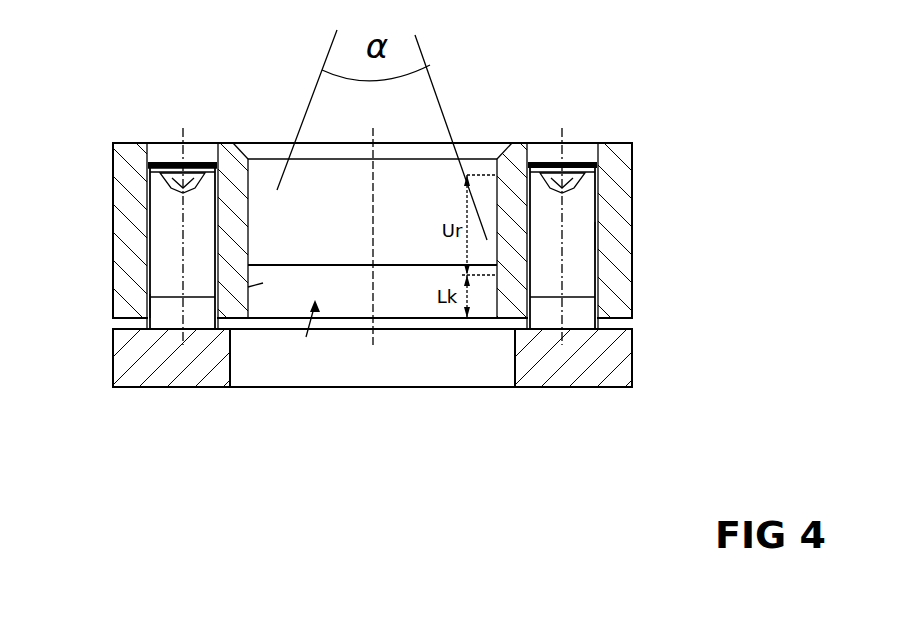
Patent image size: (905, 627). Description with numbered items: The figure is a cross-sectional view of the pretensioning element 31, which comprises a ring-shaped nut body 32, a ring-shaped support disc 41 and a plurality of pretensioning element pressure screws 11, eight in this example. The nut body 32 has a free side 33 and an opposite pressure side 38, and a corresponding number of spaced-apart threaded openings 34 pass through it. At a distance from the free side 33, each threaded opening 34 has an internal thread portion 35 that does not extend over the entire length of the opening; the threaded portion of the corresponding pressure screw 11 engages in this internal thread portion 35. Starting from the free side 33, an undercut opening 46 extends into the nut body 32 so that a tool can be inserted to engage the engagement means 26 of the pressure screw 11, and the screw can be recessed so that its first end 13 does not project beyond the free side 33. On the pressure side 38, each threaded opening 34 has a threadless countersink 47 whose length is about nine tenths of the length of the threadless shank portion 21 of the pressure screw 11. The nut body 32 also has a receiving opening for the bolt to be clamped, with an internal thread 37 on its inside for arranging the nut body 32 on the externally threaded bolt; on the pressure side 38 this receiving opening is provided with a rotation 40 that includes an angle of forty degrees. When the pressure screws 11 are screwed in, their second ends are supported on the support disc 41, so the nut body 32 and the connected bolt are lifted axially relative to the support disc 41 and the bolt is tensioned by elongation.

The pretensioning element pressure screw 11 is at (78, 309).
The first end 13 is at (182, 131).
The threadless shank portion 21 is at (372, 382).
The engagement means 26 is at (580, 143).
The pretensioning element 31 is at (692, 203).
The nut body 32 is at (635, 263).
The free side 33 is at (608, 143).
The threaded opening 34 is at (113, 271).
The internal thread portion 35 is at (548, 230).
The internal thread 37 is at (253, 218).
The pressure side 38 is at (692, 358).
The rotation 40 is at (235, 298).
The support disc 41 is at (372, 392).
The undercut opening 46 is at (372, 135).
The threadless countersink 47 is at (112, 348).